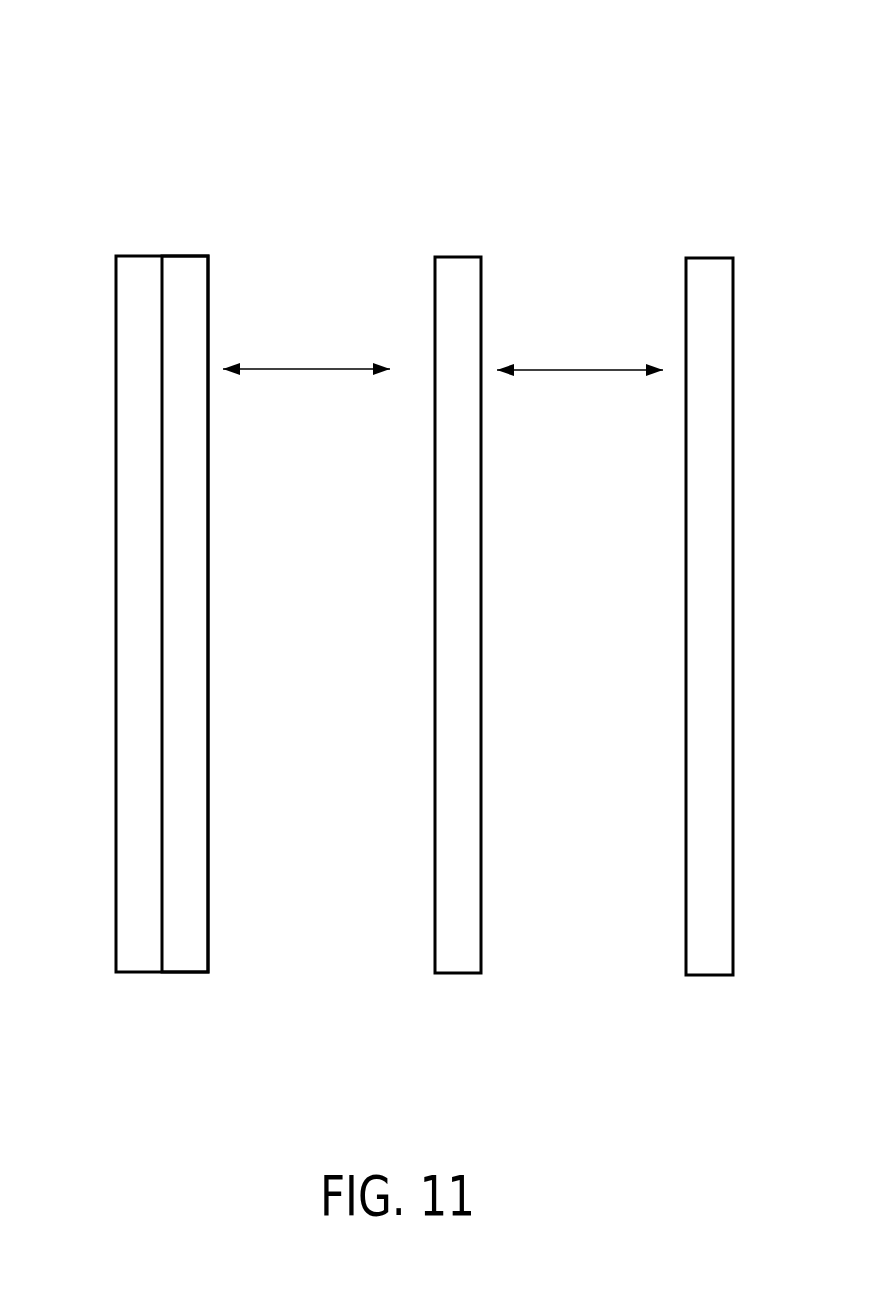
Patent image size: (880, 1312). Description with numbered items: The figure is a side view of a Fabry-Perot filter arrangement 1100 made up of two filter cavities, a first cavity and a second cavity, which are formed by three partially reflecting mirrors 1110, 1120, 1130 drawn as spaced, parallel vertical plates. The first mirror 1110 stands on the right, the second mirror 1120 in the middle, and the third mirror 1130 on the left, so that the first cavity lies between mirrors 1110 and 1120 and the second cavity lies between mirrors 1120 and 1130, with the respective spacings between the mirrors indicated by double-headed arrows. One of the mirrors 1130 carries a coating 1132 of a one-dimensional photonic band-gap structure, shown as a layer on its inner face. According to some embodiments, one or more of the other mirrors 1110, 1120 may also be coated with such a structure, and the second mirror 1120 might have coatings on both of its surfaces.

The pixel electrode arrangement 1100 is at (182, 62).
The partially reflecting mirror 1110 is at (685, 577).
The second mirror 1120 is at (433, 577).
The partially reflecting mirror 1130 is at (172, 645).
The coating 1132 is at (181, 975).